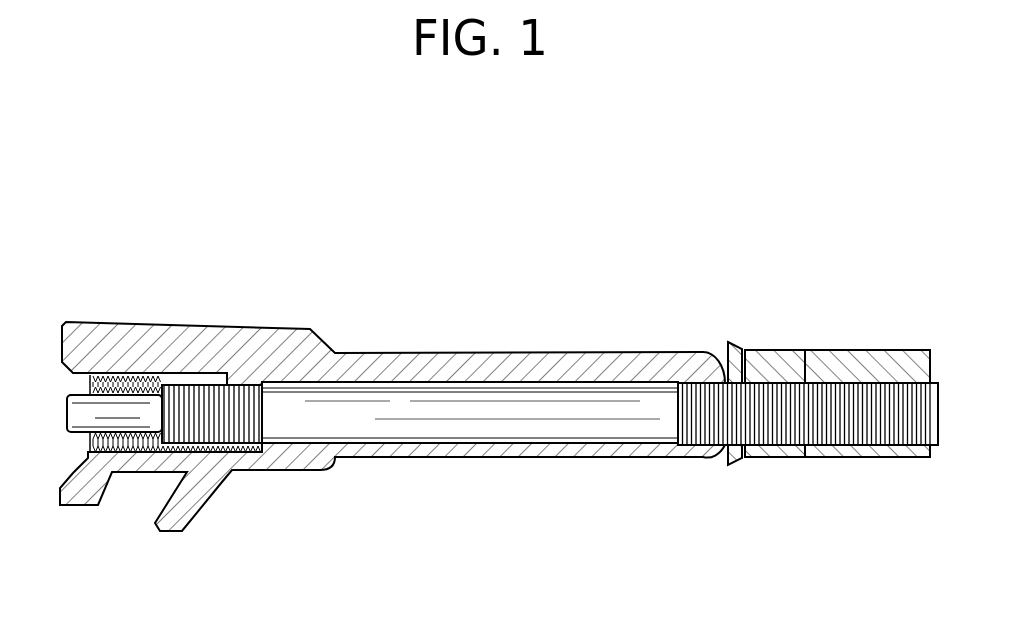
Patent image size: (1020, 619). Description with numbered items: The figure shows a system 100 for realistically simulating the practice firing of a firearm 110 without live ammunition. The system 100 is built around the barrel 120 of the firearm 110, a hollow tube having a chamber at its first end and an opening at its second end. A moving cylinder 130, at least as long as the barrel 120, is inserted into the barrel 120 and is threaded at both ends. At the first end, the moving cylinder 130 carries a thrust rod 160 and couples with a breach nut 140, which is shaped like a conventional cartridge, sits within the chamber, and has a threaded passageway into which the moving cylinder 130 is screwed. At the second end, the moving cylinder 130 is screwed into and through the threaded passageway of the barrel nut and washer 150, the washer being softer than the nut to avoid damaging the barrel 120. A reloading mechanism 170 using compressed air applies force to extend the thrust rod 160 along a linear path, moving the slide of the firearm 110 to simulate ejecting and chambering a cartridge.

The system 100 is at (250, 192).
The firearm 110 is at (547, 352).
The barrel 120 is at (453, 447).
The moving cylinder 130 is at (315, 423).
The breach nut 140 is at (122, 372).
The barrel nut and washer 150 is at (773, 350).
The thrust rod 160 is at (117, 413).
The reloading mechanism 170 is at (902, 327).